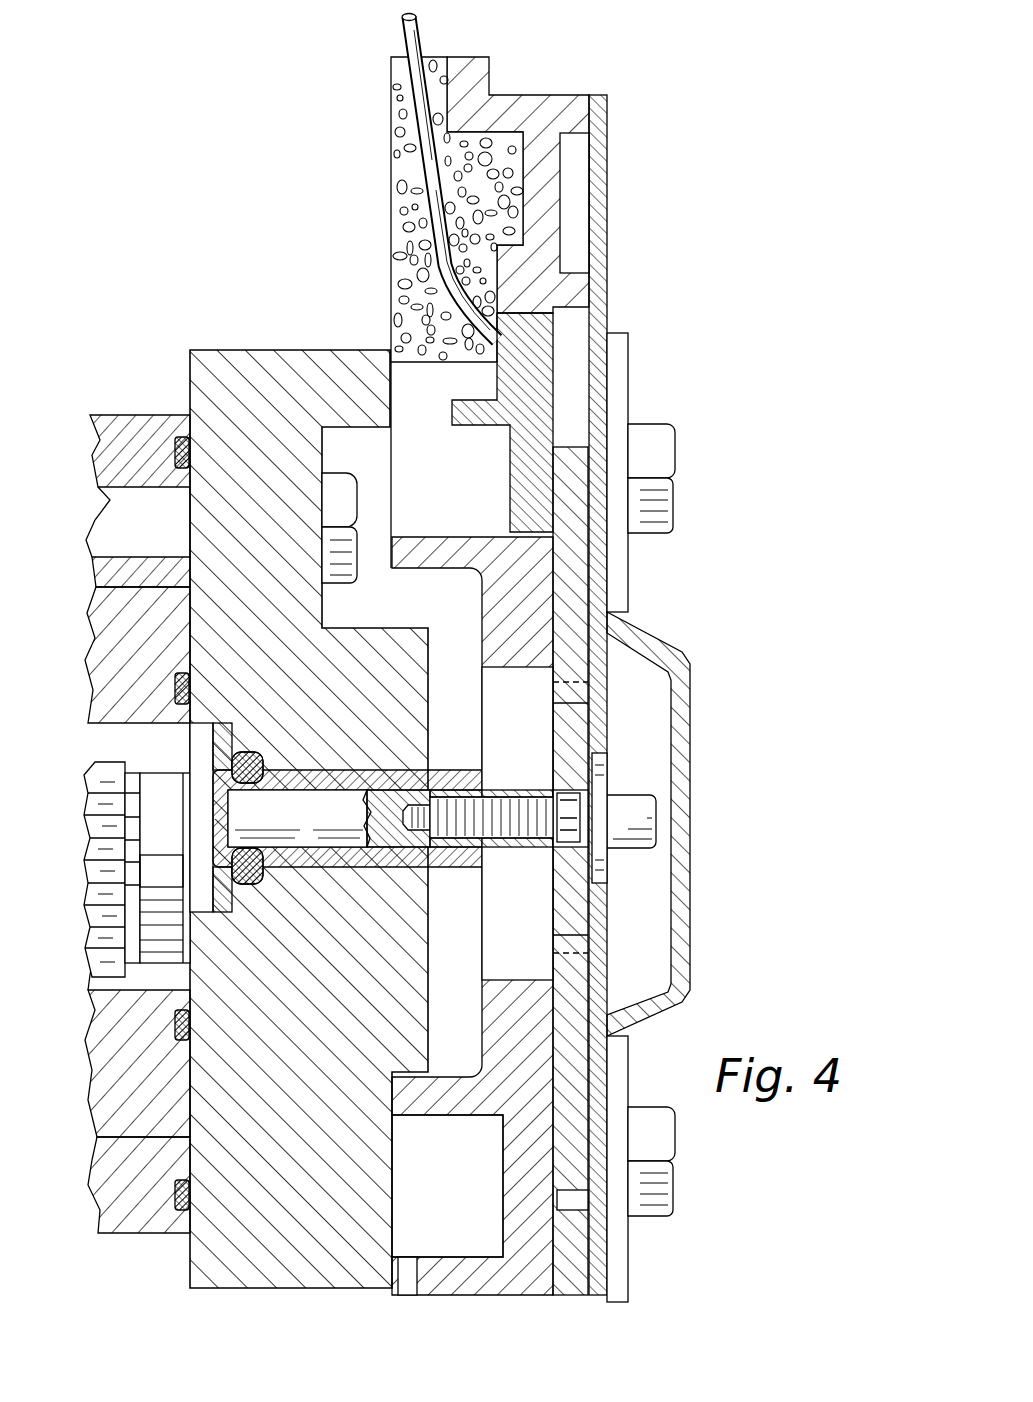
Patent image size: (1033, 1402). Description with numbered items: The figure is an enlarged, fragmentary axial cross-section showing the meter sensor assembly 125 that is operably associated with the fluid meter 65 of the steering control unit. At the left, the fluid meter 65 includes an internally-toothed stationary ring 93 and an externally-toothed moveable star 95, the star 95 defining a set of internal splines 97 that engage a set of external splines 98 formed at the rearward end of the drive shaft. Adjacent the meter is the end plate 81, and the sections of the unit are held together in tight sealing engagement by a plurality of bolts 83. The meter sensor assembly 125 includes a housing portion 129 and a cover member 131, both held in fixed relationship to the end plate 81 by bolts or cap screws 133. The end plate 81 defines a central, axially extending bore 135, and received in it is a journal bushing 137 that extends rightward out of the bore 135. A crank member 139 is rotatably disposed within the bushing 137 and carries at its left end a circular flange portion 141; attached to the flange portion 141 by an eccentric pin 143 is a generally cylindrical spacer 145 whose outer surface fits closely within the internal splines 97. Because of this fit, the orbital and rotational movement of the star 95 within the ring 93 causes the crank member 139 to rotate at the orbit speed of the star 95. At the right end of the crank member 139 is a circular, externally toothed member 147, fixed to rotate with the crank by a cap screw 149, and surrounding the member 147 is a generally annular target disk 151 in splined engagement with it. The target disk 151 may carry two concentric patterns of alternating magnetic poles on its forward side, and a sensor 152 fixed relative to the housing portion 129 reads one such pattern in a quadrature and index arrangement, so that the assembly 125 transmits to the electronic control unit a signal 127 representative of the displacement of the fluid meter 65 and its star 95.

The fluid meter 65 is at (103, 372).
The end plate 81 is at (232, 1253).
The bolts 83 is at (344, 493).
The stationary ring 93 is at (113, 1168).
The moveable star 95 is at (110, 620).
The internal splines 97 is at (140, 983).
The external splines 98 is at (105, 810).
The meter sensor assembly 125 is at (664, 142).
The signal 127 is at (406, 38).
The housing portion 129 is at (462, 1278).
The cover member 131 is at (694, 914).
The bolts or cap screws 133 is at (665, 446).
The bore 135 is at (372, 872).
The journal bushing 137 is at (327, 775).
The crank member 139 is at (306, 823).
The circular flange portion 141 is at (197, 900).
The eccentric pin 143 is at (160, 873).
The cylindrical spacer 145 is at (160, 778).
The externally toothed member 147 is at (585, 900).
The cap screw 149 is at (650, 828).
The target disk 151 is at (575, 585).
The sensor 152 is at (540, 352).